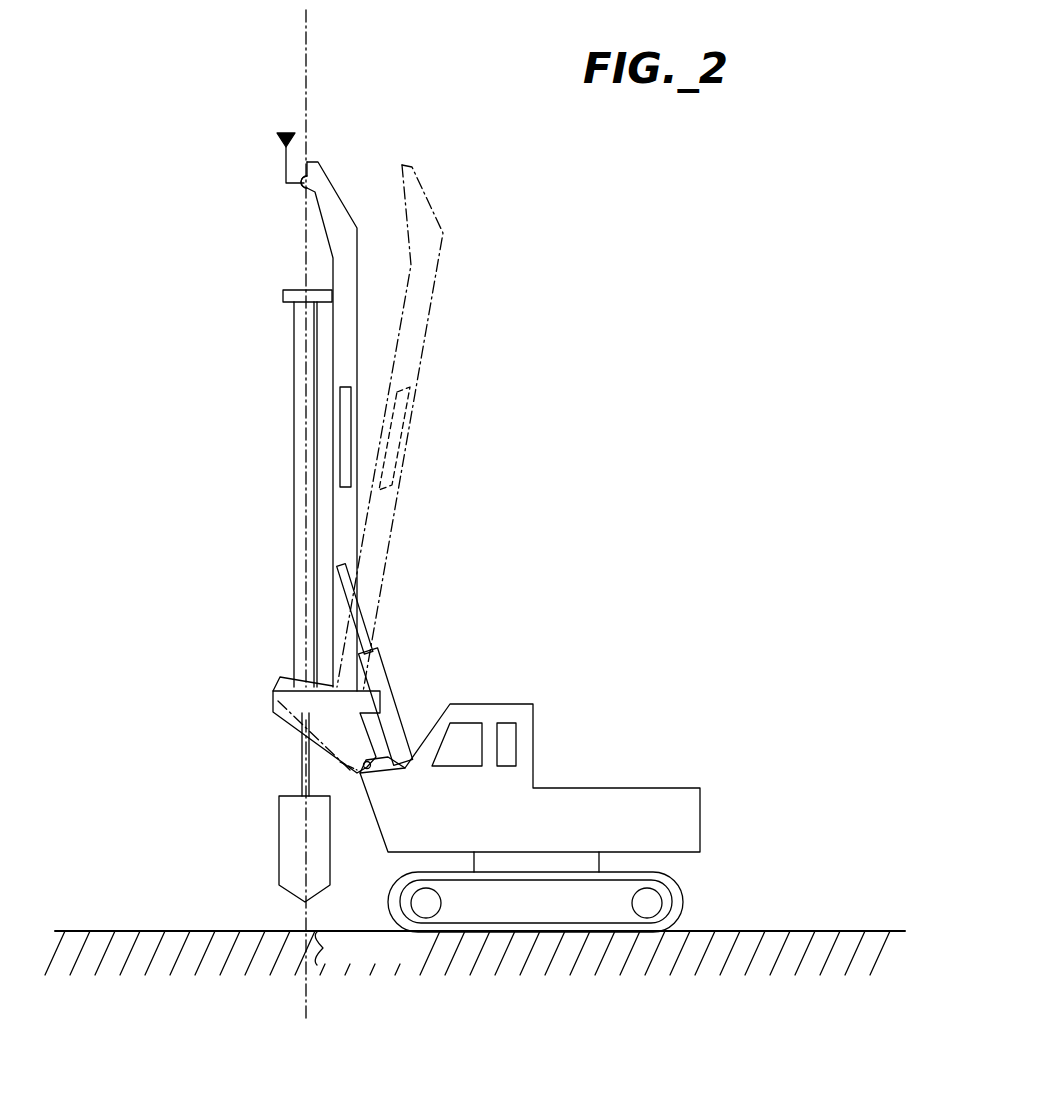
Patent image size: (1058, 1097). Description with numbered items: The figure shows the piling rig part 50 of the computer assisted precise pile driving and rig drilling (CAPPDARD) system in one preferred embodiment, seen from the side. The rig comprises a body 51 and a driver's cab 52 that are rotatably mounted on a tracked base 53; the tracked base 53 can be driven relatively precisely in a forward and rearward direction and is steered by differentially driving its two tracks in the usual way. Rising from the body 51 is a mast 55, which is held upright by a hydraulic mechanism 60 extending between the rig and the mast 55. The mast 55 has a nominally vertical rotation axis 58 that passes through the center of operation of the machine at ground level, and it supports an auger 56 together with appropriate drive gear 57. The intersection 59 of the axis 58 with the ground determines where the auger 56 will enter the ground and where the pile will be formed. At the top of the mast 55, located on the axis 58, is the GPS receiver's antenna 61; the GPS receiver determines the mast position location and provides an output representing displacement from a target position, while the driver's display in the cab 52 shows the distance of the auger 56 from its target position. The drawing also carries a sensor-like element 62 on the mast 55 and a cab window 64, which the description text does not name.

The piling rig part 50 is at (155, 995).
The body 51 is at (613, 787).
The driver's cab 52 is at (512, 755).
The tracked base 53 is at (397, 877).
The mast 55 is at (342, 563).
The auger 56 is at (305, 843).
The drive gear 57 is at (311, 460).
The rotation axis 58 is at (307, 62).
The intersection of the axis with the ground 59 is at (298, 960).
The hydraulic mechanism 60 is at (393, 670).
The GPS receiver's antenna 61 is at (303, 187).
The position sensor 62 is at (346, 405).
The operator cab window 64 is at (452, 755).